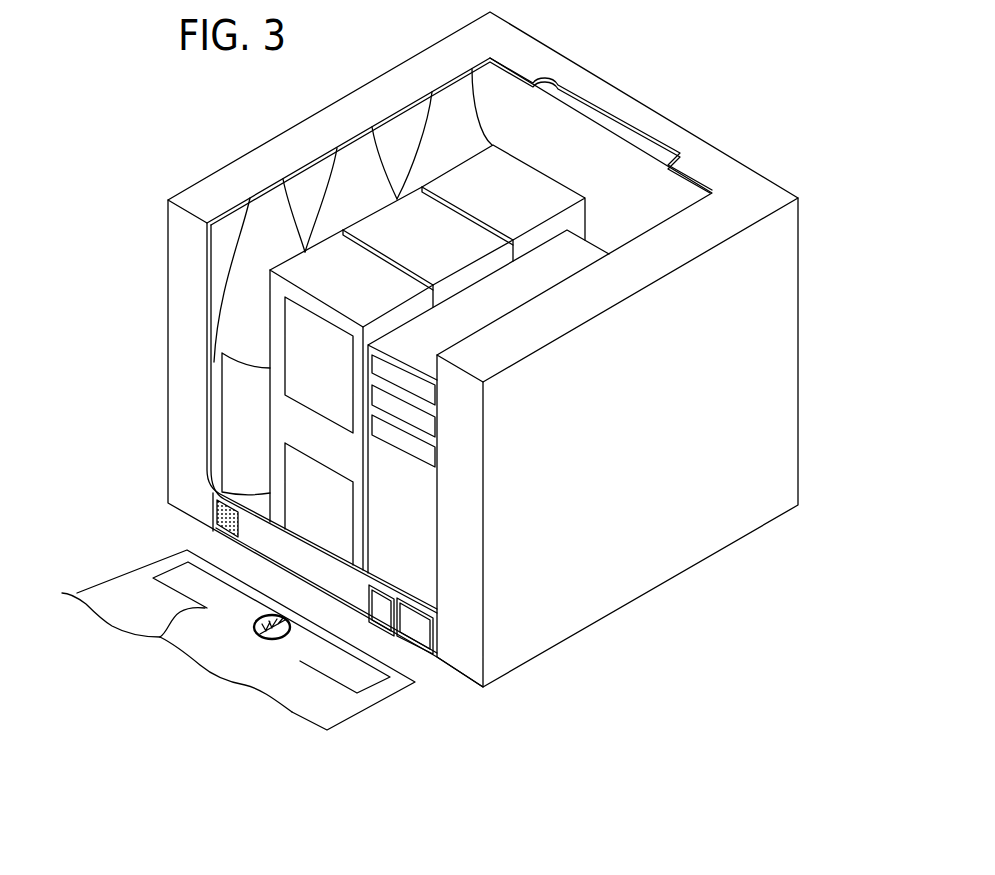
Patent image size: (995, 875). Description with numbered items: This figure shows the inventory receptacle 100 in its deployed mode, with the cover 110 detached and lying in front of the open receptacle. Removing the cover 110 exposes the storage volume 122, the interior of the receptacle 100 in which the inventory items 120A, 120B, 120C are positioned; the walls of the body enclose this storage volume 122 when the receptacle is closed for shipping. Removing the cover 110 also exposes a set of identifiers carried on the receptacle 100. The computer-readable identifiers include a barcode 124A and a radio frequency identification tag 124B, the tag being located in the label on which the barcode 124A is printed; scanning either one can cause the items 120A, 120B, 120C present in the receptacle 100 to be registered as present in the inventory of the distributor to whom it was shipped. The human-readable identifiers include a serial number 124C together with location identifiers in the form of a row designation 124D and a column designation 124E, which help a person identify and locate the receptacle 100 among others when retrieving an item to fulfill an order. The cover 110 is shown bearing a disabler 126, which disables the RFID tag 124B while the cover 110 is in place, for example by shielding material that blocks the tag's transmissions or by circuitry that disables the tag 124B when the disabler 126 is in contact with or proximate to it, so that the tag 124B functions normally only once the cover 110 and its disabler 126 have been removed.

The inventory receptacle 100 is at (743, 112).
The cover 110 is at (340, 703).
The inventory item 120A is at (472, 151).
The inventory item 120B is at (522, 200).
The inventory item 120C is at (534, 297).
The storage volume 122 is at (667, 199).
The barcode 124A is at (215, 499).
The radio frequency identification (RFID) tag 124B is at (213, 533).
The serial number 124C is at (335, 597).
The row designation 124D is at (397, 586).
The column designation 124E is at (424, 633).
The disabler 126 is at (160, 637).